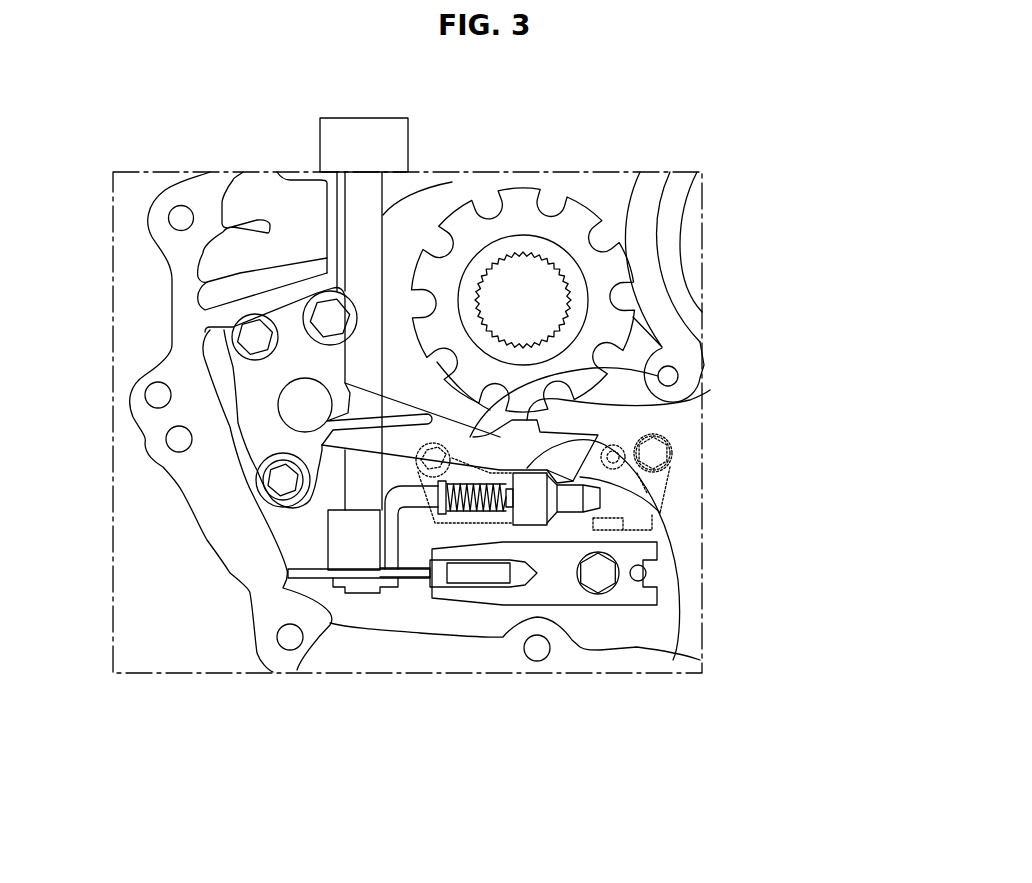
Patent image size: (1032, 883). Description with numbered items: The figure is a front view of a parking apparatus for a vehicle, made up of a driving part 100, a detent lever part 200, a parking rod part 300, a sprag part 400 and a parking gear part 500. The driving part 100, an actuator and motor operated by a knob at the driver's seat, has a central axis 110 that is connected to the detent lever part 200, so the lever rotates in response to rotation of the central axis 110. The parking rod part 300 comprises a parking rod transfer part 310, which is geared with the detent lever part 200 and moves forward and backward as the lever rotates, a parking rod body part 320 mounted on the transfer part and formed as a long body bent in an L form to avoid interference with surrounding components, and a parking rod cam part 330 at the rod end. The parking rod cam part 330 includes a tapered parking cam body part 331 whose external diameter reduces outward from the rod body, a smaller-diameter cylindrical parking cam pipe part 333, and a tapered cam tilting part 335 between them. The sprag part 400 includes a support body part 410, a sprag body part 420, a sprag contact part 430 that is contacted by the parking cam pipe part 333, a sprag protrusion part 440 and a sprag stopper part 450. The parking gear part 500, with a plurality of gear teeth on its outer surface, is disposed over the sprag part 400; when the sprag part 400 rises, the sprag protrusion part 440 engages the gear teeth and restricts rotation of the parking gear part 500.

The driving part 100 is at (320, 144).
The central axis 110 is at (452, 182).
The parking gear part 500 is at (563, 222).
The detent lever part 200 is at (288, 570).
The parking rod part 300 is at (492, 766).
The parking rod transfer part 310 is at (296, 662).
The parking rod body part 320 is at (392, 553).
The parking rod cam part 330 is at (570, 628).
The parking cam body part 331 is at (532, 510).
The parking cam pipe part 333 is at (599, 594).
The cam tilting part 335 is at (657, 545).
The sprag part 400 is at (798, 402).
The support body part 410 is at (263, 435).
The sprag body part 420 is at (667, 366).
The sprag contact part 430 is at (660, 513).
The sprag protrusion part 440 is at (690, 400).
The sprag stopper part 450 is at (593, 467).